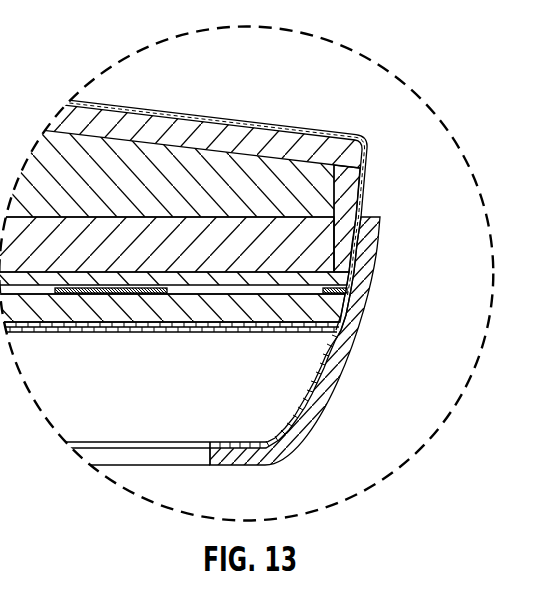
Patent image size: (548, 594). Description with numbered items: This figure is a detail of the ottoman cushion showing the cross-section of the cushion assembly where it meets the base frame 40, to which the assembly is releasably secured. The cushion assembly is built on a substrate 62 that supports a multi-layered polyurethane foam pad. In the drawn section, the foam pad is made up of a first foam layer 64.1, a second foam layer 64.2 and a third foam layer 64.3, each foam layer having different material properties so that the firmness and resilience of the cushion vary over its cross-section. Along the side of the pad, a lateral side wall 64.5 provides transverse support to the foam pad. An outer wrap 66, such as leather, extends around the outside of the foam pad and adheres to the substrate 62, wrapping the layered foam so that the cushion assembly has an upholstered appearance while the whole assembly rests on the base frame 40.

The outer wrap 66 is at (110, 103).
The third foam layer 64.3 is at (207, 128).
The second foam layer 64.2 is at (287, 170).
The lateral side wall 64.5 is at (350, 198).
The first foam layer 64.1 is at (320, 229).
The substrate 62 is at (352, 290).
The base frame 40 is at (368, 355).